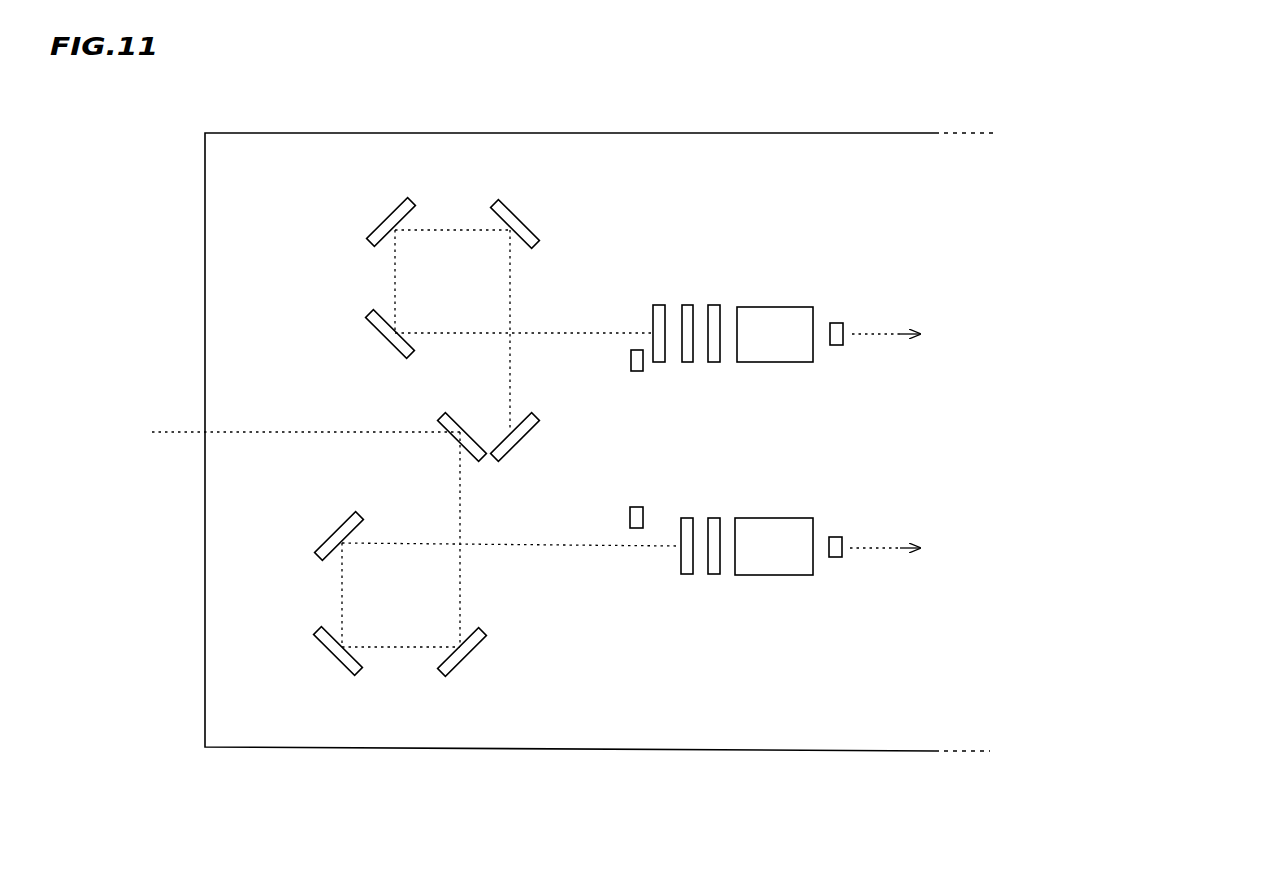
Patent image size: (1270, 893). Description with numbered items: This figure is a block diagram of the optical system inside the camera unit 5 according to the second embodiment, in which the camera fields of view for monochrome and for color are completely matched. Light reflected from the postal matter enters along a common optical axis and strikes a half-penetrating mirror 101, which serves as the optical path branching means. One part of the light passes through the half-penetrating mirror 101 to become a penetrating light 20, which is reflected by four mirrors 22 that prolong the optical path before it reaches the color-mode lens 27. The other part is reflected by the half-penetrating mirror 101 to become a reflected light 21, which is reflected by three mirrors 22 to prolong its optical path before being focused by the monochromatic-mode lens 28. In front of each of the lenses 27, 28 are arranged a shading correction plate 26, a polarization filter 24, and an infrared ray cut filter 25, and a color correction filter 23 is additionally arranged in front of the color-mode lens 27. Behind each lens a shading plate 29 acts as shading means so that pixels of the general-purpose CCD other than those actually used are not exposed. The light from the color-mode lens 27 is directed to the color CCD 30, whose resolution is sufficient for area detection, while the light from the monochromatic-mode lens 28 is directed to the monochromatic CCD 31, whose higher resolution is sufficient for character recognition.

The camera unit 5 is at (820, 133).
The penetrating light 20 is at (512, 370).
The reflected light 21 is at (460, 490).
The mirror 22 is at (395, 213).
The color correction filter 23 is at (658, 305).
The polarization filter 24 is at (686, 305).
The infrared ray cut filter 25 is at (715, 305).
The shading correction plate 26 is at (634, 372).
The color-mode lens 27 is at (780, 307).
The monochromatic-mode lens 28 is at (780, 518).
The shading plate 29 is at (836, 347).
The color CCD 30 is at (1045, 336).
The monochromatic CCD 31 is at (1081, 561).
The half-penetrating mirror 101 is at (438, 418).